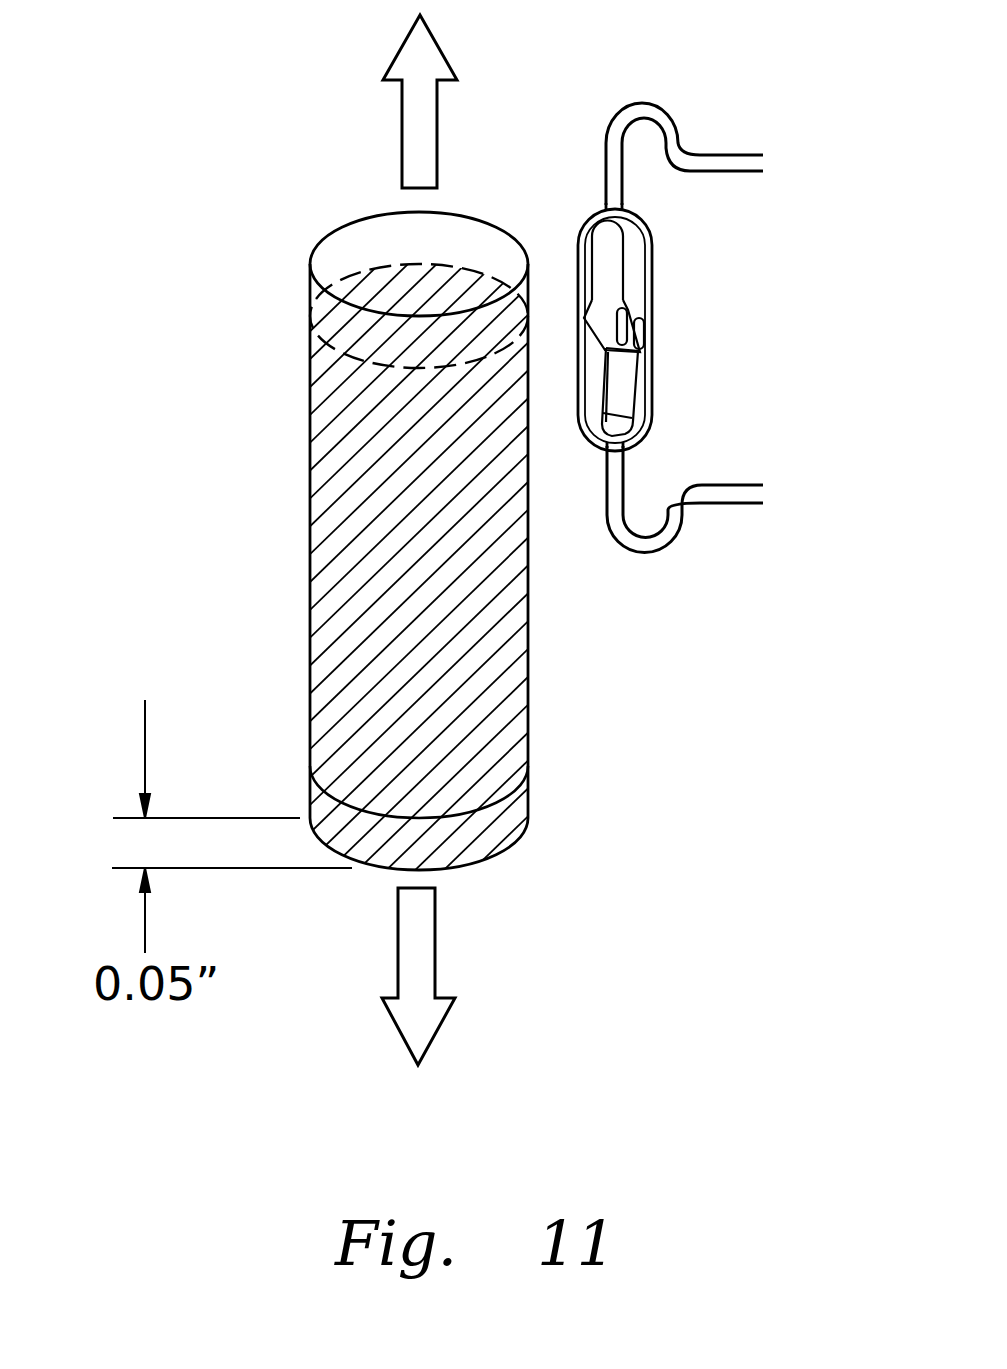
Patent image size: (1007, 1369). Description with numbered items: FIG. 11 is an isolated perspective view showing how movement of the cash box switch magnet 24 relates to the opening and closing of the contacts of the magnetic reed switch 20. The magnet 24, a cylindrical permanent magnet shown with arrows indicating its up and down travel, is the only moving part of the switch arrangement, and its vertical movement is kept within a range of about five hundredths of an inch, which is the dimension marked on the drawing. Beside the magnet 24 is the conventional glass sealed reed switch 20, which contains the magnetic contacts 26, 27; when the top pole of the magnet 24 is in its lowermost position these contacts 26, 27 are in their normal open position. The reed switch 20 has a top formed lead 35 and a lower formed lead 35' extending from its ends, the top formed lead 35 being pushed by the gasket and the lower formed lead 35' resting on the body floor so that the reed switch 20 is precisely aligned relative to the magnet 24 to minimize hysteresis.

The magnetic reed switch 20 is at (645, 224).
The magnet 24 is at (340, 575).
The magnetic contact 26 is at (613, 265).
The magnetic contact 27 is at (620, 390).
The top formed lead 35 is at (684, 102).
The lower formed lead 35' is at (687, 538).